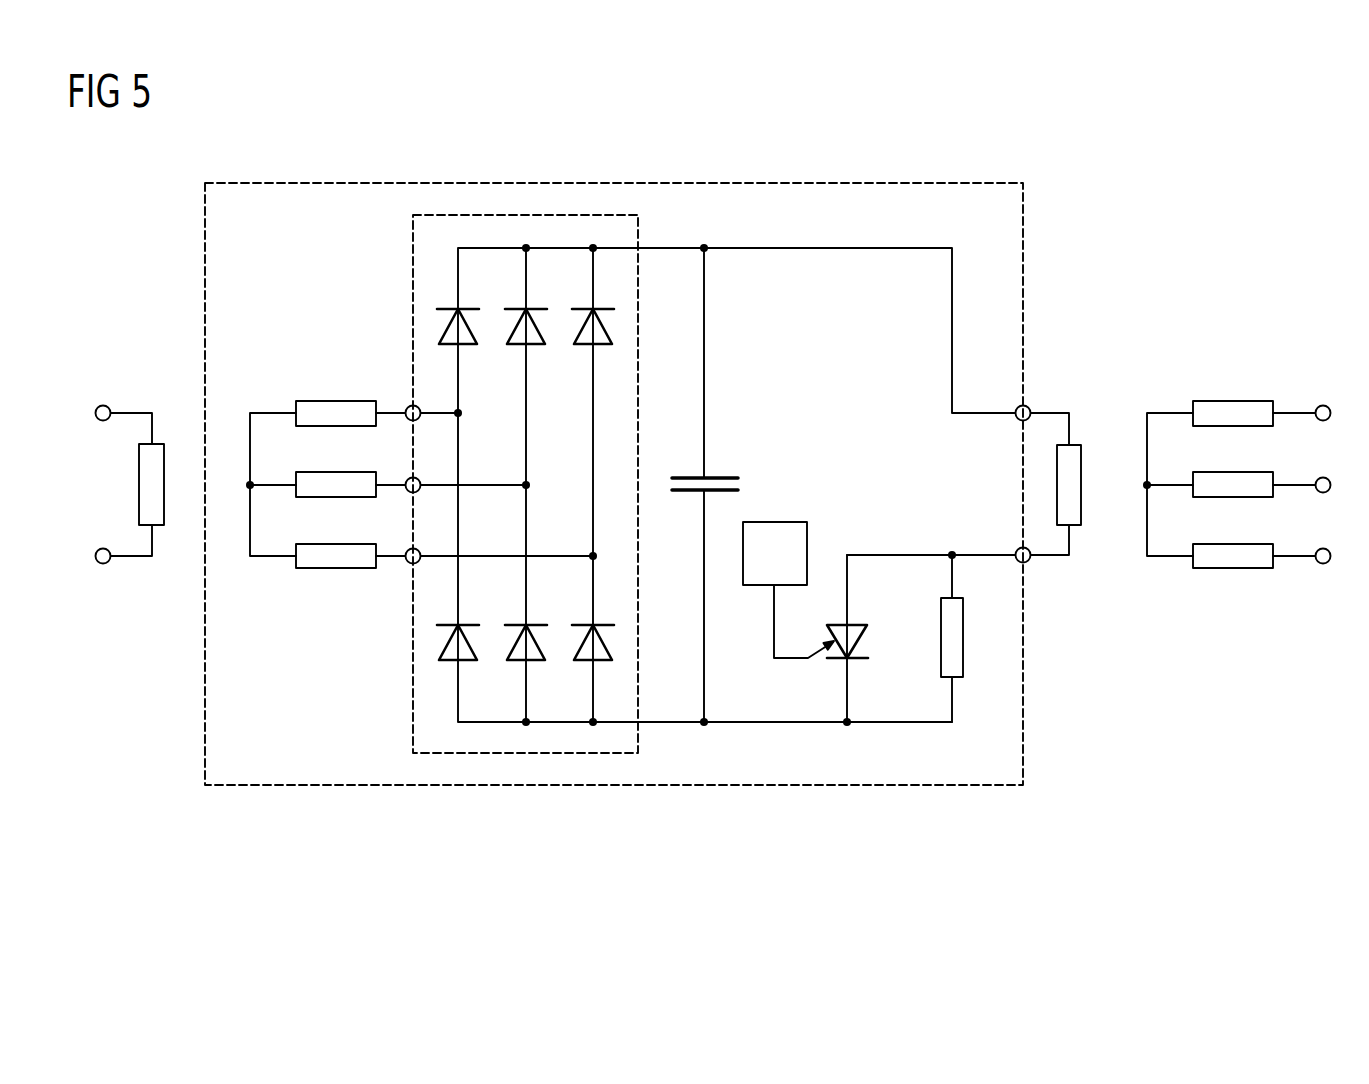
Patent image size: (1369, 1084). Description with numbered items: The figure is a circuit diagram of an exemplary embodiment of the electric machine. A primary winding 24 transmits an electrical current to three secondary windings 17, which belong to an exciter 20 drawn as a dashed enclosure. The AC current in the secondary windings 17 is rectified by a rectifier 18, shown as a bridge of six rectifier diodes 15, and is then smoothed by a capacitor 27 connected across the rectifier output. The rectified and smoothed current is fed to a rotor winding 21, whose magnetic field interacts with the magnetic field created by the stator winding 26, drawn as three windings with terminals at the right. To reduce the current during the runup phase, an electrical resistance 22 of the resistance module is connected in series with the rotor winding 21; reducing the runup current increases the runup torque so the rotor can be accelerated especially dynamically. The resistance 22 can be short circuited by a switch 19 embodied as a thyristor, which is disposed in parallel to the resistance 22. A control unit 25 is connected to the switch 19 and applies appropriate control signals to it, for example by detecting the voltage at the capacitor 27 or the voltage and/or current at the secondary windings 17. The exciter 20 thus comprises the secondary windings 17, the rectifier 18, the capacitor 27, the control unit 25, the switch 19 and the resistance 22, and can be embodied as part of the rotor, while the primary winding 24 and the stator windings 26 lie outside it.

The rectifier diodes 15 is at (618, 690).
The secondary windings 17 is at (330, 401).
The rectifier 18 is at (413, 257).
The switch 19 is at (862, 635).
The exciter 20 is at (808, 183).
The rotor winding 21 is at (1074, 445).
The electrical resistance 22 is at (940, 613).
The primary winding 24 is at (139, 485).
The control unit 25 is at (775, 522).
The stator winding 26 is at (1230, 401).
The capacitor 27 is at (723, 476).